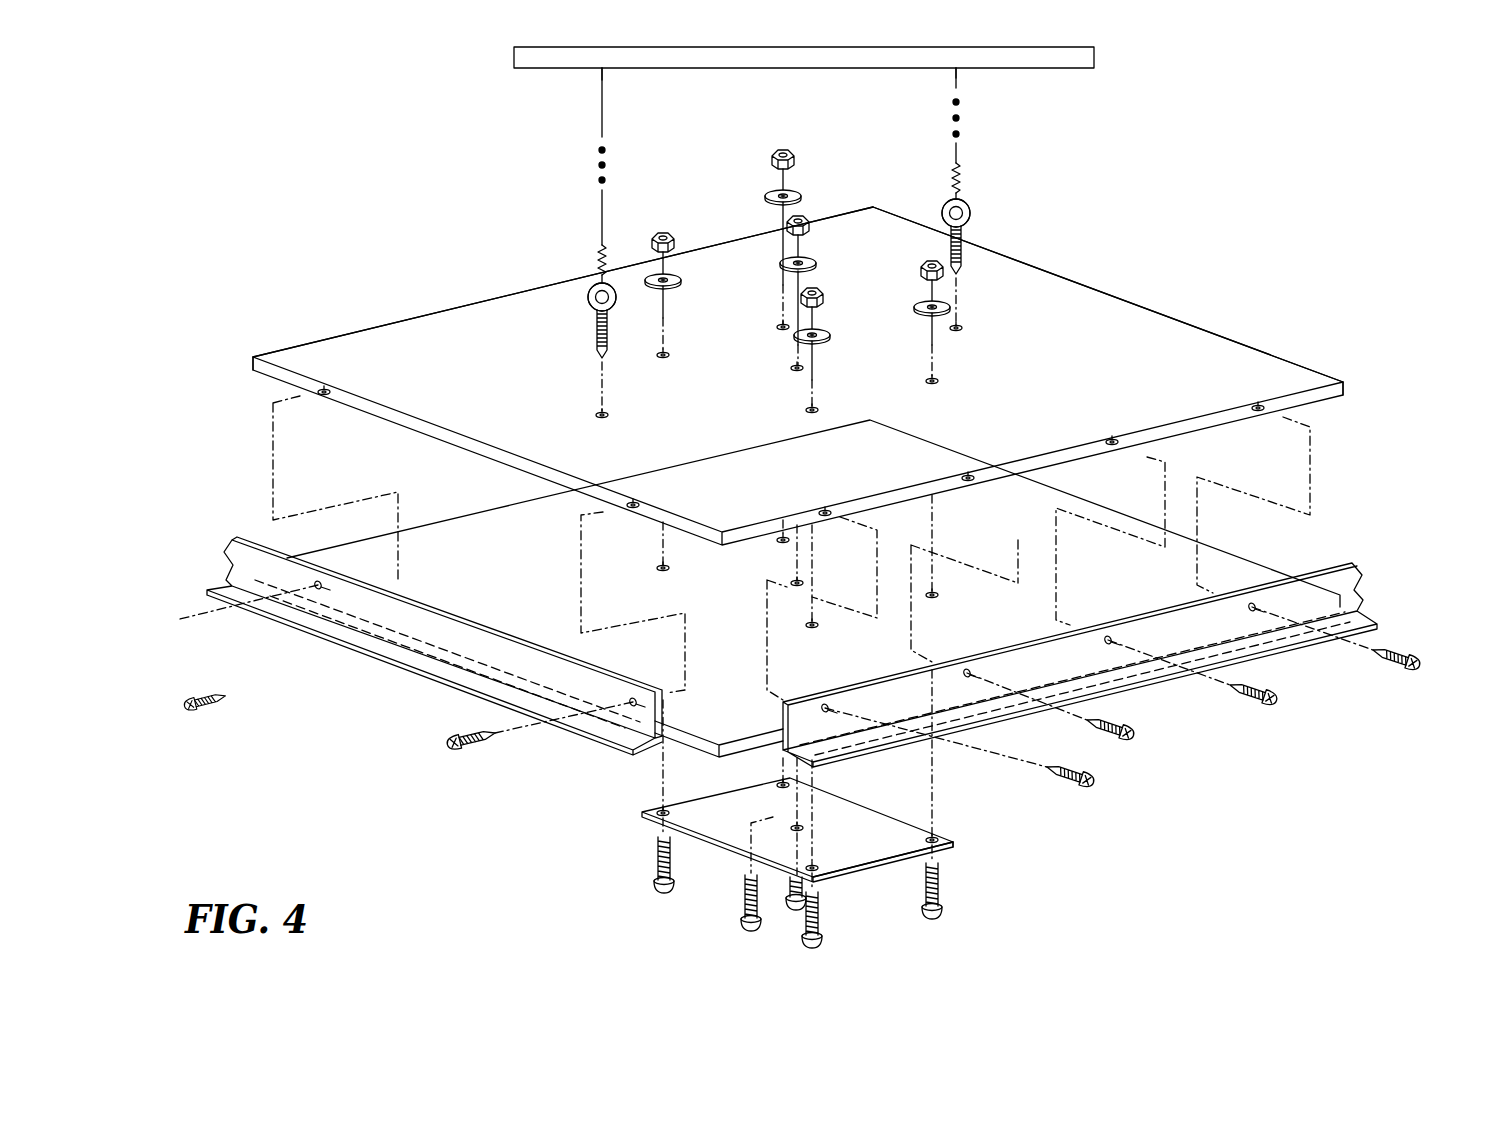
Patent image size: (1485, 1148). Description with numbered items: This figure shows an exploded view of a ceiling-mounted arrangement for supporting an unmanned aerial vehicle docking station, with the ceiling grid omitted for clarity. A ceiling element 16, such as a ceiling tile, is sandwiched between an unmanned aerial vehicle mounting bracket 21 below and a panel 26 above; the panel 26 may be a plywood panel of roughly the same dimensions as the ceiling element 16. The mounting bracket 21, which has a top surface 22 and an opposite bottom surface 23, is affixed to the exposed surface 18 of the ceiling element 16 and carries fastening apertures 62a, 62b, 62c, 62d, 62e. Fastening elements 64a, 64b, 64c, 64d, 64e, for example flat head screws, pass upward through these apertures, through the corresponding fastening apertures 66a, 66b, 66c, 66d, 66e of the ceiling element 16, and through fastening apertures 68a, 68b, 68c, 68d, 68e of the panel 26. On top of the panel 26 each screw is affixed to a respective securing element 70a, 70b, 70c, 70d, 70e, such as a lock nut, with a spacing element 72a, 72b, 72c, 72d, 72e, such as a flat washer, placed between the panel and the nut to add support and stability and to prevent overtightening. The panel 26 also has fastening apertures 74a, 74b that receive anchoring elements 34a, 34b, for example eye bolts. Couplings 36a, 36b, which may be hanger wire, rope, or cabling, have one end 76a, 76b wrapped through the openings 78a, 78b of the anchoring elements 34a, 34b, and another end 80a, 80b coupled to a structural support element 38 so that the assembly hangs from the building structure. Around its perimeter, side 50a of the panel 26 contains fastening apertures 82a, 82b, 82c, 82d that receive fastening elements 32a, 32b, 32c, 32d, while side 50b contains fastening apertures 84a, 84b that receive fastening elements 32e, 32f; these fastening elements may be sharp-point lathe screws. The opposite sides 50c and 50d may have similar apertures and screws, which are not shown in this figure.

The ceiling element 16 is at (813, 588).
The exposed surface 18 is at (683, 747).
The unmanned aerial vehicle mounting bracket 21 is at (797, 830).
The top surface 22 is at (885, 838).
The bottom surface 23 is at (855, 873).
The panel 26 is at (798, 376).
The fastening element 32a is at (1100, 778).
The fastening element 32b is at (1136, 733).
The fastening element 32c is at (1277, 702).
The fastening element 32d is at (1420, 668).
The fastening element 32e is at (142, 620).
The fastening element 32f is at (446, 740).
The anchoring element 34a is at (597, 347).
The anchoring element 34b is at (962, 252).
The coupling 36a is at (602, 113).
The coupling 36b is at (958, 88).
The structural support element 38 is at (514, 57).
The side 50a is at (1343, 386).
The side 50b is at (252, 359).
The side 50c is at (310, 338).
The side 50d is at (1177, 318).
The fastening aperture 62a is at (660, 812).
The fastening aperture 62b is at (783, 783).
The fastening aperture 62c is at (938, 840).
The fastening aperture 62d is at (813, 867).
The fastening aperture 62e is at (797, 828).
The fastening element 64a is at (657, 845).
The fastening element 64b is at (747, 895).
The fastening element 64c is at (937, 887).
The fastening element 64d is at (805, 917).
The fastening element 64e is at (797, 893).
The fastening aperture 66a is at (663, 568).
The fastening aperture 66b is at (780, 543).
The fastening aperture 66c is at (928, 594).
The fastening aperture 66d is at (810, 625).
The fastening aperture 66e is at (797, 583).
The fastening aperture 68a is at (668, 355).
The fastening aperture 68b is at (782, 325).
The fastening aperture 68c is at (935, 382).
The fastening aperture 68d is at (807, 410).
The fastening aperture 68e is at (793, 368).
The securing element 70a is at (652, 233).
The securing element 70b is at (792, 148).
The securing element 70c is at (940, 278).
The securing element 70d is at (823, 303).
The securing element 70e is at (788, 223).
The spacing element 72a is at (647, 273).
The spacing element 72b is at (798, 190).
The spacing element 72c is at (937, 317).
The spacing element 72d is at (817, 343).
The spacing element 72e is at (787, 262).
The fastening aperture 74a is at (600, 413).
The fastening aperture 74b is at (960, 328).
The end 76a is at (605, 275).
The end 76b is at (957, 188).
The opening 78a is at (593, 305).
The opening 78b is at (970, 213).
The end 80a is at (602, 80).
The end 80b is at (958, 82).
The fastening aperture 82a is at (823, 512).
The fastening aperture 82b is at (967, 478).
The fastening aperture 82c is at (1117, 443).
The fastening aperture 82d is at (1253, 410).
The fastening aperture 84a is at (320, 390).
The fastening aperture 84b is at (632, 506).